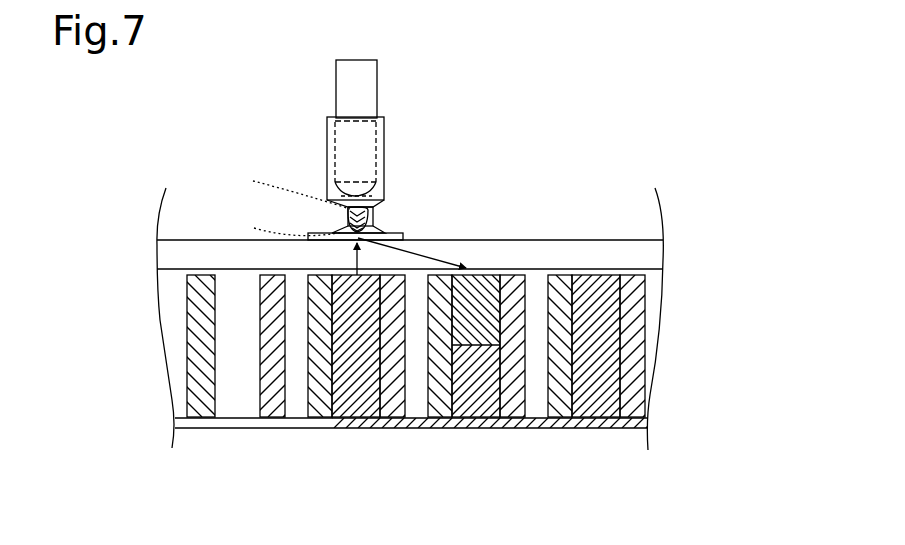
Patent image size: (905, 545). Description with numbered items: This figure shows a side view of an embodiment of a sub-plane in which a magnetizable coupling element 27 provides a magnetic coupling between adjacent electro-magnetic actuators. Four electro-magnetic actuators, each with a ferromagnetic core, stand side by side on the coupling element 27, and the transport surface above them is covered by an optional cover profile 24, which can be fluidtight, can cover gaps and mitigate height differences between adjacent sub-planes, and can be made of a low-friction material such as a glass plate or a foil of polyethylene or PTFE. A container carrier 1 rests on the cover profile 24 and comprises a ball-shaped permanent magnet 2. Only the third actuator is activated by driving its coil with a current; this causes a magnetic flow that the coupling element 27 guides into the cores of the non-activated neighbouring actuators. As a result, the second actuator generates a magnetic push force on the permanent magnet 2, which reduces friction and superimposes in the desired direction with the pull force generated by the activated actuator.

The container carrier 1 is at (316, 102).
The permanent magnet 2 is at (345, 219).
The cover profile 24 is at (528, 240).
The magnetizable coupling element 27 is at (295, 423).